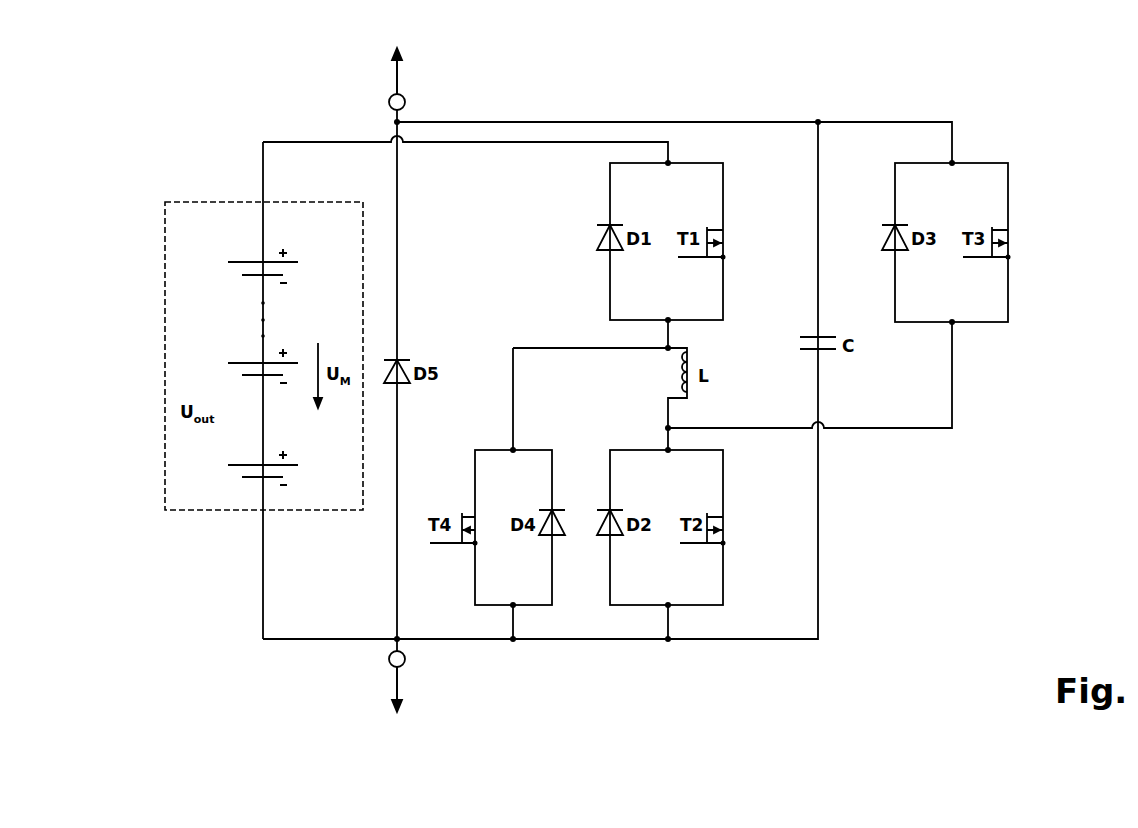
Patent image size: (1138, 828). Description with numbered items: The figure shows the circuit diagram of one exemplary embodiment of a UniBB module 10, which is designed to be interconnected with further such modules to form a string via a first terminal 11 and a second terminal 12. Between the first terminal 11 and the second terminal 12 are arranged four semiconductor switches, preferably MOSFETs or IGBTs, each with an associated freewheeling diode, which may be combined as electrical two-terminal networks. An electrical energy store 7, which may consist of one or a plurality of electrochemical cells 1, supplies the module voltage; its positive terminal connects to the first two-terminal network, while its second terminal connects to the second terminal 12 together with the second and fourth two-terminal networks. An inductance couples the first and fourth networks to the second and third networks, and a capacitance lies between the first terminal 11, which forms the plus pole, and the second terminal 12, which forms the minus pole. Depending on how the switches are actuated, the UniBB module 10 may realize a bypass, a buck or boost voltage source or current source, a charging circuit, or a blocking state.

The UniBB module 10 is at (399, 70).
The first terminal 11 is at (406, 102).
The second terminal 12 is at (406, 659).
The electrical energy store 7 is at (191, 200).
The electrochemical cell 1 is at (242, 260).